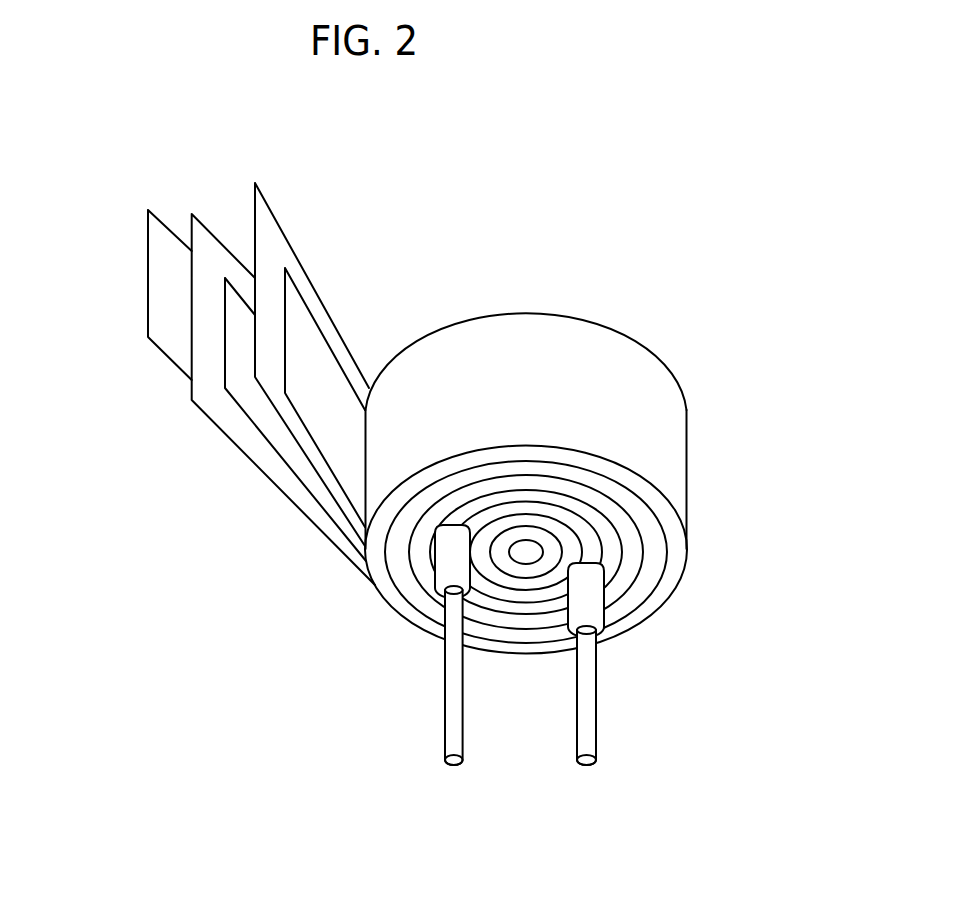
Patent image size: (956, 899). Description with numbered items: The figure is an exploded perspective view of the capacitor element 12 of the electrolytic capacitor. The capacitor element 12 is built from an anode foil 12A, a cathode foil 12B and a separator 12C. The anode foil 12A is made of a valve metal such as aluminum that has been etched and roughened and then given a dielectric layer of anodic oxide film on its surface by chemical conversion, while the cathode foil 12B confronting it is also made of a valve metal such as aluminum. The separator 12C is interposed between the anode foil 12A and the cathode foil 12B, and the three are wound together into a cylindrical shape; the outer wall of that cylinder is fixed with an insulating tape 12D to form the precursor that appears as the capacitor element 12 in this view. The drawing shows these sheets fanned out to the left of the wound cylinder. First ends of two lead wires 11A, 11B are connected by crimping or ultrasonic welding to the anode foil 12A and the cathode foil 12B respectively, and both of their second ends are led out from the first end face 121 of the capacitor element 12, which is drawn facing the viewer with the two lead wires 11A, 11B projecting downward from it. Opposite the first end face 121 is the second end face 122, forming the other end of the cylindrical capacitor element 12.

The capacitor element 12 is at (575, 450).
The first end face 121 is at (656, 601).
The second end face 122 is at (555, 304).
The anode foil 12A is at (307, 335).
The cathode foil 12B is at (245, 398).
The separator 12C is at (263, 233).
The insulating tape 12D is at (163, 288).
The lead wire 11A is at (452, 732).
The lead wire 11B is at (588, 732).